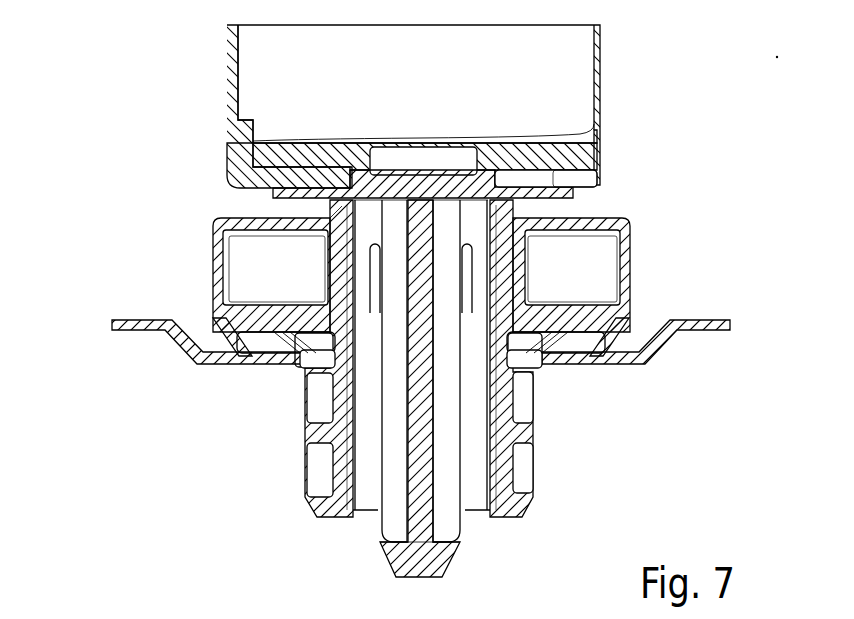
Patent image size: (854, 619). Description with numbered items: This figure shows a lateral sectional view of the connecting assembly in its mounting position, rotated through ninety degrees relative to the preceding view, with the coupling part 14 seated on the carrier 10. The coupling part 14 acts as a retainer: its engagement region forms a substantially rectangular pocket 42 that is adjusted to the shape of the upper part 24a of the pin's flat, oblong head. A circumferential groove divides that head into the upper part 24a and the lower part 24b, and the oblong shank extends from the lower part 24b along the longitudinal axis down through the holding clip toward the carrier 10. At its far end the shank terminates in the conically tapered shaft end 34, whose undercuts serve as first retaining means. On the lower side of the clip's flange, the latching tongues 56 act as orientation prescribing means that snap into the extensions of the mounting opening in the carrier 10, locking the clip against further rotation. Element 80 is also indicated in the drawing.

The carrier 10 is at (112, 323).
The coupling part 14 is at (612, 78).
The upper part of the head 24a is at (560, 158).
The lower part of the head 24b is at (566, 194).
The shaft end 34 is at (442, 554).
The pocket 42 is at (246, 160).
The latching tongues 56 is at (272, 368).
The connector housing 80 is at (603, 272).